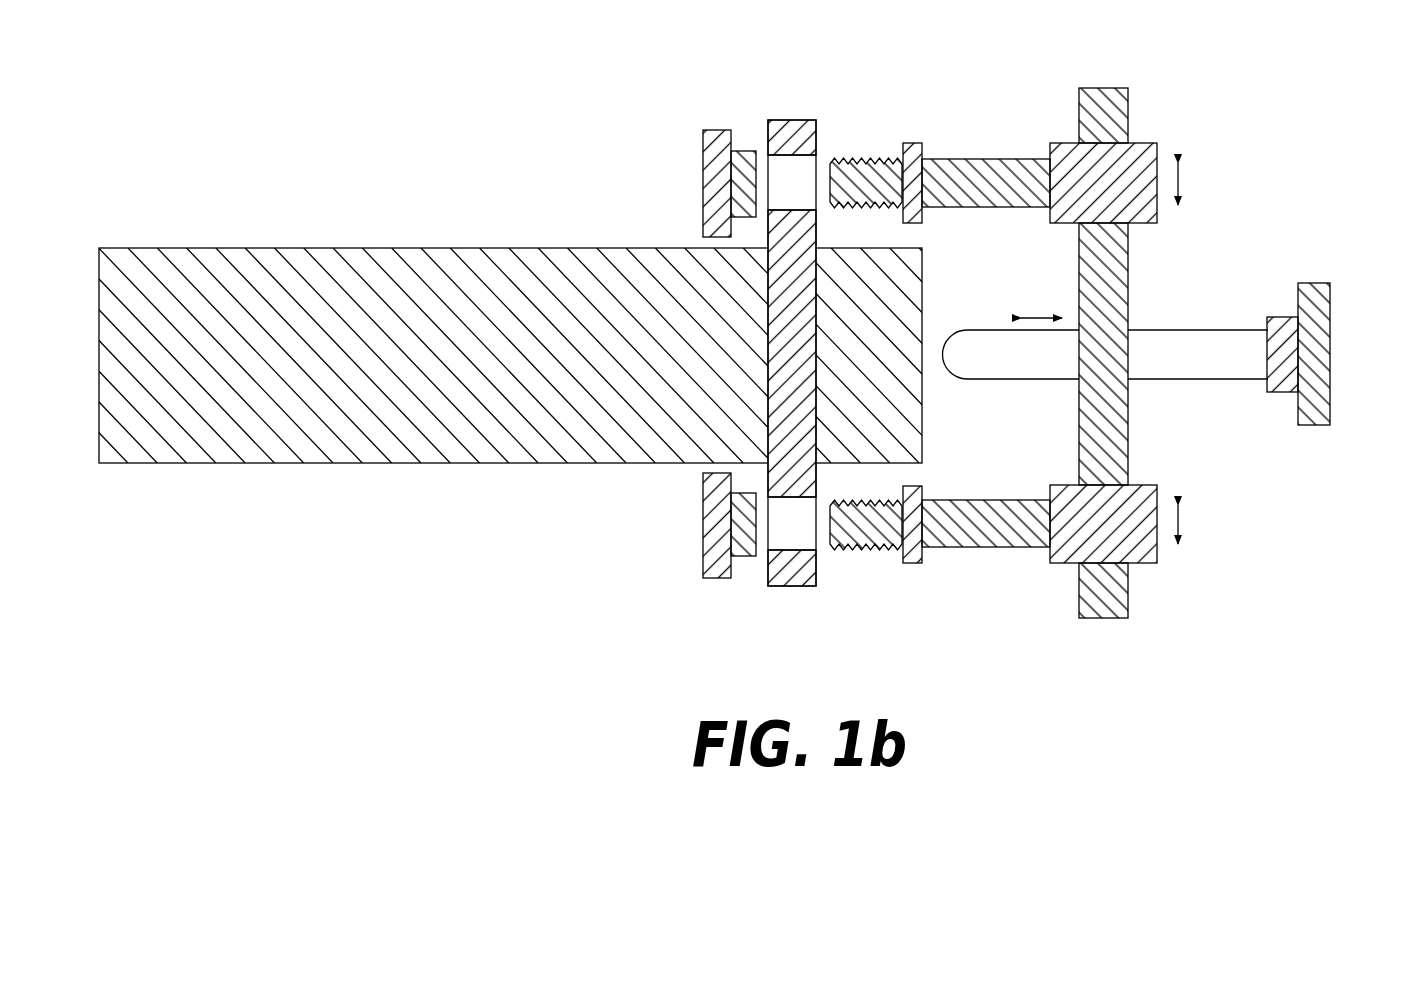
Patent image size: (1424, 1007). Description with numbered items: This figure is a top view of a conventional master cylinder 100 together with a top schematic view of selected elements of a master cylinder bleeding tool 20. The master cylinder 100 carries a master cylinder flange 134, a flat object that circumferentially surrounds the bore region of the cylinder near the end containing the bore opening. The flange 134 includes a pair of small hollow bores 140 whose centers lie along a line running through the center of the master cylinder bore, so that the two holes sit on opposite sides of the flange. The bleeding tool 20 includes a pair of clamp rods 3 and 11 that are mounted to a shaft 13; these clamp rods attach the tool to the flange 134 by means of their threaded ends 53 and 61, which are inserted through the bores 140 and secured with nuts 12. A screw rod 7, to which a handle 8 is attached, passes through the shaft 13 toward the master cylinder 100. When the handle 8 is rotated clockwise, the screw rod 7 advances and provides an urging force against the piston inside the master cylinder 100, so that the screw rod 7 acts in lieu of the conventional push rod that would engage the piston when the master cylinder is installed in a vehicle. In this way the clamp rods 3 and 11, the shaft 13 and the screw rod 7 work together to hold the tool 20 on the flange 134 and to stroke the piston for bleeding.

The master cylinder 100 is at (184, 228).
The master cylinder flange 134 is at (772, 587).
The small hollow bores 140 is at (790, 150).
The nuts 12 is at (703, 170).
The threaded end 61 is at (868, 158).
The threaded end 53 is at (880, 550).
The clamp rod 3 is at (982, 158).
The clamp rod 11 is at (978, 548).
The shaft 13 is at (1128, 270).
The screw rod 7 is at (1222, 380).
The master cylinder bleeding tool 20 is at (1257, 292).
The handle 8 is at (1330, 365).